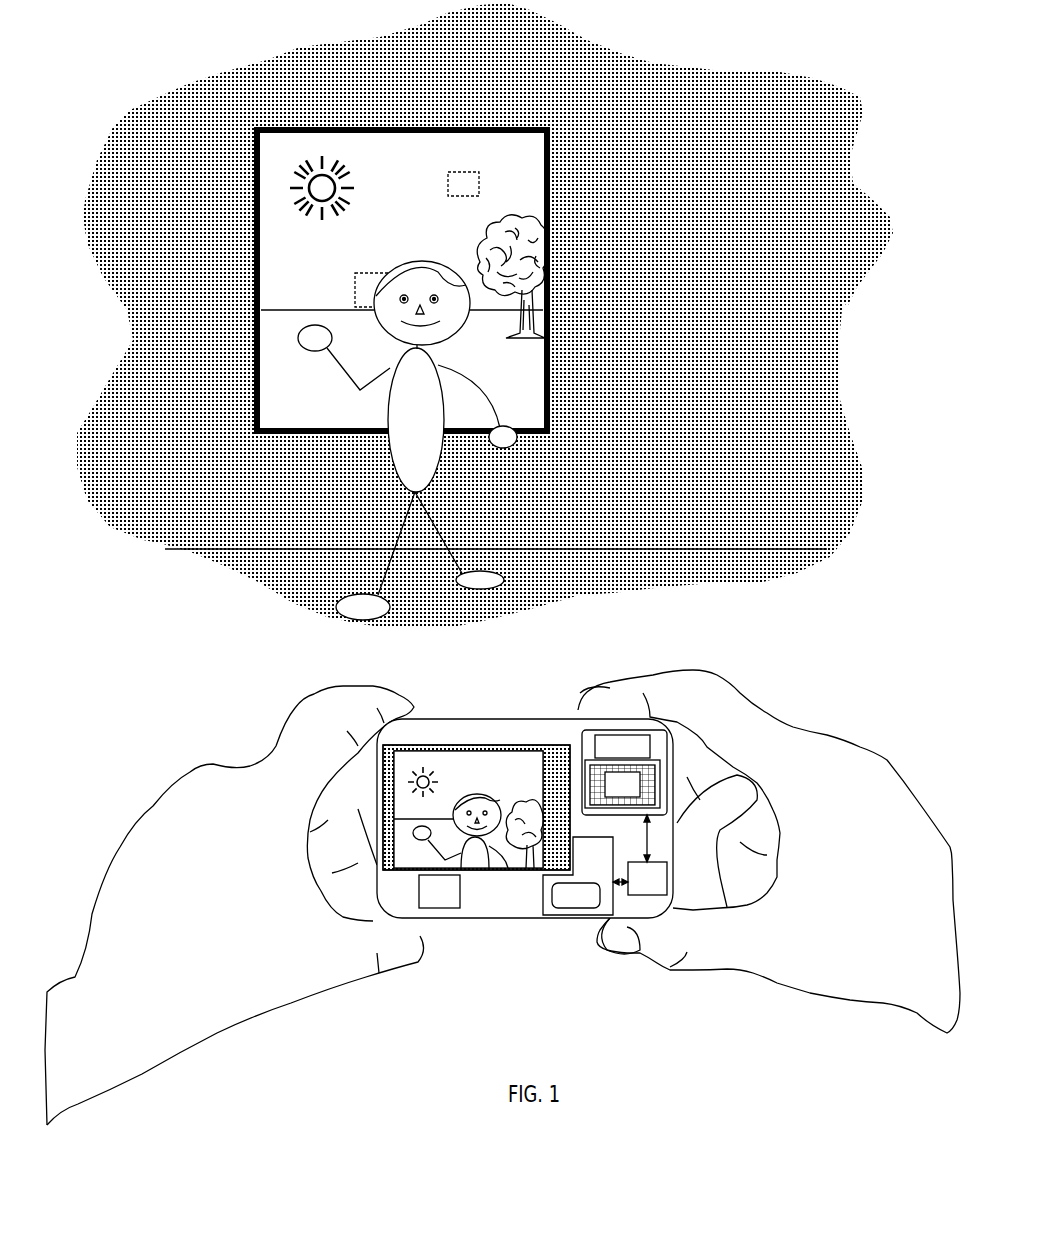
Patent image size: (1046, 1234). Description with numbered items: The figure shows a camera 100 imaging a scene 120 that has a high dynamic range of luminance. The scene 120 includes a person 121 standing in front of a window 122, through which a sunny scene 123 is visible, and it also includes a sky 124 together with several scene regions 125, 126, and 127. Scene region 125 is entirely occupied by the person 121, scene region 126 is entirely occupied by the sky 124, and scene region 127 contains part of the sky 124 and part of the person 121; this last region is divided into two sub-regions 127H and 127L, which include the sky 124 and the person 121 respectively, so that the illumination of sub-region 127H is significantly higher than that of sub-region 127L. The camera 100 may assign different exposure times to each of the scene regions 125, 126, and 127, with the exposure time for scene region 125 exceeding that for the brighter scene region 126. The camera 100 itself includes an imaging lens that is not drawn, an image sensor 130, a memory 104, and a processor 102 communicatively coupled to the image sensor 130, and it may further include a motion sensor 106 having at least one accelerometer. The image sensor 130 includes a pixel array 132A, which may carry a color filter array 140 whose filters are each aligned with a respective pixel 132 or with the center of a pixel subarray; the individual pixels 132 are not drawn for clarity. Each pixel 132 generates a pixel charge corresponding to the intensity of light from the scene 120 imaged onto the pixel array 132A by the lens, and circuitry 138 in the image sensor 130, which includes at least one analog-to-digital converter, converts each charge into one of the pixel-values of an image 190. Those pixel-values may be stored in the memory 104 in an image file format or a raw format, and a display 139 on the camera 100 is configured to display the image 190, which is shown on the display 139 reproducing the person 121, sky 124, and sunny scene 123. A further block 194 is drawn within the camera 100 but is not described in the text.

The scene 120 is at (186, 70).
The window 122 is at (553, 194).
The sunny scene 123 is at (552, 141).
The sky 124 is at (522, 167).
The scene region 126 is at (448, 186).
The scene region 127 is at (354, 282).
The sub-region 127H is at (355, 292).
The sub-region 127L is at (389, 273).
The scene region 125 is at (443, 332).
The person 121 is at (432, 429).
The camera 100 is at (476, 719).
The image sensor 130 is at (581, 732).
The pixels 132 is at (585, 760).
The pixel array 132A is at (622, 784).
The display 139 is at (382, 800).
The image 190 is at (550, 786).
The circuitry 138 is at (640, 756).
The color filter array 140 is at (640, 794).
The memory 104 is at (608, 864).
The motion sensor 106 is at (456, 904).
The storage 194 is at (592, 906).
The processor 102 is at (662, 889).